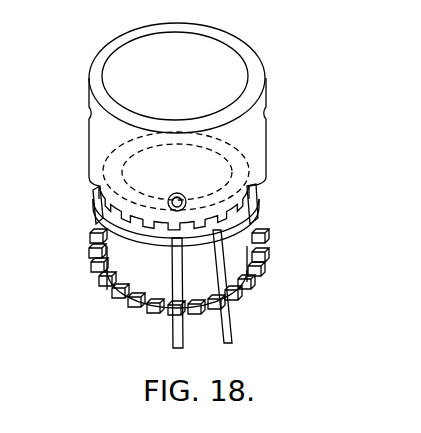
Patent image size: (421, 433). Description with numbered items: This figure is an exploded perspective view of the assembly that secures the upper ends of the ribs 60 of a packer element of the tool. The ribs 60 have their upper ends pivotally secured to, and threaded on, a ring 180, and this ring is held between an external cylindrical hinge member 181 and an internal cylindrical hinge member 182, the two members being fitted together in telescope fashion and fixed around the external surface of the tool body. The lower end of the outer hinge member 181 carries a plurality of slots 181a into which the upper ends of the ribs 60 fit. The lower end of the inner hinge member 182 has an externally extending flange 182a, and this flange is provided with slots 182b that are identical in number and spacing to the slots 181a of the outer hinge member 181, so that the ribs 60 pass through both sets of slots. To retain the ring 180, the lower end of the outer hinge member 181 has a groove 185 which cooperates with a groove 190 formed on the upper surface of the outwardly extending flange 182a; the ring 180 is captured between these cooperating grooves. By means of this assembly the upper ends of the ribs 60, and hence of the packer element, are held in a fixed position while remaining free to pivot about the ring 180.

The external cylindrical hinge member 181 is at (242, 49).
The slots 181a is at (92, 186).
The ring 180 is at (95, 212).
The internal cylindrical hinge member 182 is at (170, 274).
The externally extending flange 182a is at (92, 270).
The slots 182b is at (132, 309).
The groove 185 is at (246, 226).
The groove 190 is at (266, 258).
The ribs 60 is at (225, 345).